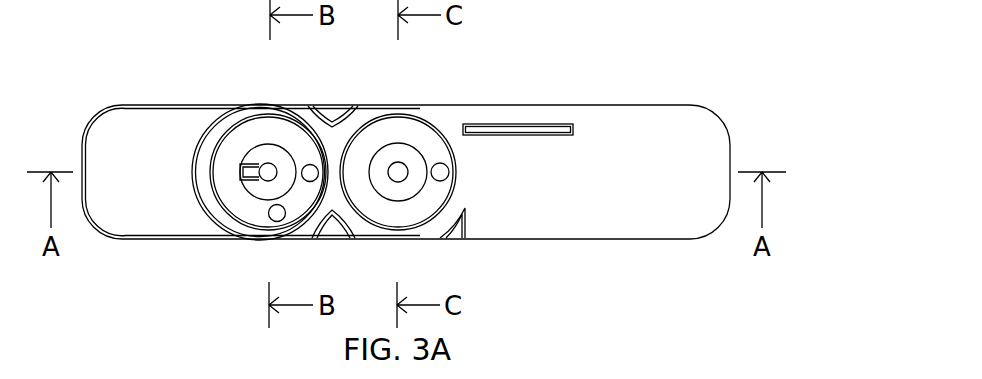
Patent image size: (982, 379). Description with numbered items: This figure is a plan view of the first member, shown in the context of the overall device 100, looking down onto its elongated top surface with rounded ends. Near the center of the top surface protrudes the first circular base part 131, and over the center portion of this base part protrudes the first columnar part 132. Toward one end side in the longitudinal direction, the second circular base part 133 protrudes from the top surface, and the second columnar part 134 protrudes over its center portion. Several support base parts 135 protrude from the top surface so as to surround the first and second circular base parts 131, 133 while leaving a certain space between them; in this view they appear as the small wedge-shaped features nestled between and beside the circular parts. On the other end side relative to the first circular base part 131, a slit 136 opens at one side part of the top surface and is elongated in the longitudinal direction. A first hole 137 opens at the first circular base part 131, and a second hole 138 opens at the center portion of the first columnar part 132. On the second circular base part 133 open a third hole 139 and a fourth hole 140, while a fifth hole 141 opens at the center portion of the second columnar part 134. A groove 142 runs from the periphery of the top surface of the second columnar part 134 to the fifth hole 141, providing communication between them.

The device 100 is at (768, 48).
The first circular base part 131 is at (397, 114).
The first columnar part 132 is at (412, 146).
The second circular base part 133 is at (245, 117).
The second columnar part 134 is at (270, 144).
The support base parts 135 is at (131, 105).
The slit 136 is at (513, 123).
The first hole 137 is at (448, 177).
The second hole 138 is at (398, 182).
The third hole 139 is at (316, 181).
The fourth hole 140 is at (277, 222).
The fifth hole 141 is at (262, 180).
The groove 142 is at (242, 166).